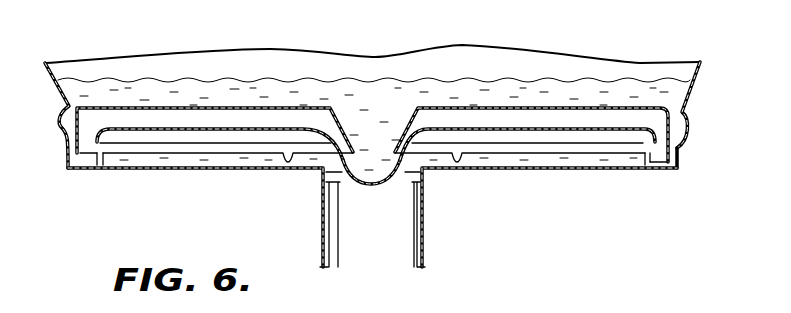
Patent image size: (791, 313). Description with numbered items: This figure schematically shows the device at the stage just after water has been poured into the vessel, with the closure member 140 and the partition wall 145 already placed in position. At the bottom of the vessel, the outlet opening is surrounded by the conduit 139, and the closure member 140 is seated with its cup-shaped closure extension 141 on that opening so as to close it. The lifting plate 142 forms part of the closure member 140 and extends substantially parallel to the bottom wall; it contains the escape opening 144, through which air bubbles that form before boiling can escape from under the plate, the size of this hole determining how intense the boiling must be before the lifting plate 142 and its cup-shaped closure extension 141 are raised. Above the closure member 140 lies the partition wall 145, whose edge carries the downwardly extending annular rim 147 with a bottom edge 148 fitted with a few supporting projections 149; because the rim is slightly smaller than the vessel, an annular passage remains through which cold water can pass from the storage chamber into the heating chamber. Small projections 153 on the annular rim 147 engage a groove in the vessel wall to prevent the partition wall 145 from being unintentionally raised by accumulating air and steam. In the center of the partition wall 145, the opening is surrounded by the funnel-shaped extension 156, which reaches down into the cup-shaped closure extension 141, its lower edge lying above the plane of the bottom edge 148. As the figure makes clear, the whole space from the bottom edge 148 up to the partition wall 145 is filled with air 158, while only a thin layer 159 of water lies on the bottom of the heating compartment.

The conduit 139 is at (416, 240).
The closure member 140 is at (492, 124).
The cup-shaped closure extension 141 is at (368, 184).
The lifting plate 142 is at (152, 127).
The escape opening 144 is at (451, 130).
The partition wall 145 is at (610, 110).
The annular rim 147 is at (677, 141).
The bottom edge 148 is at (680, 170).
The supporting projections 149 is at (102, 160).
The small projections 153 is at (686, 127).
The funnel-shaped extension 156 is at (372, 127).
The air 158 is at (92, 117).
The thin layer of water 159 is at (503, 160).